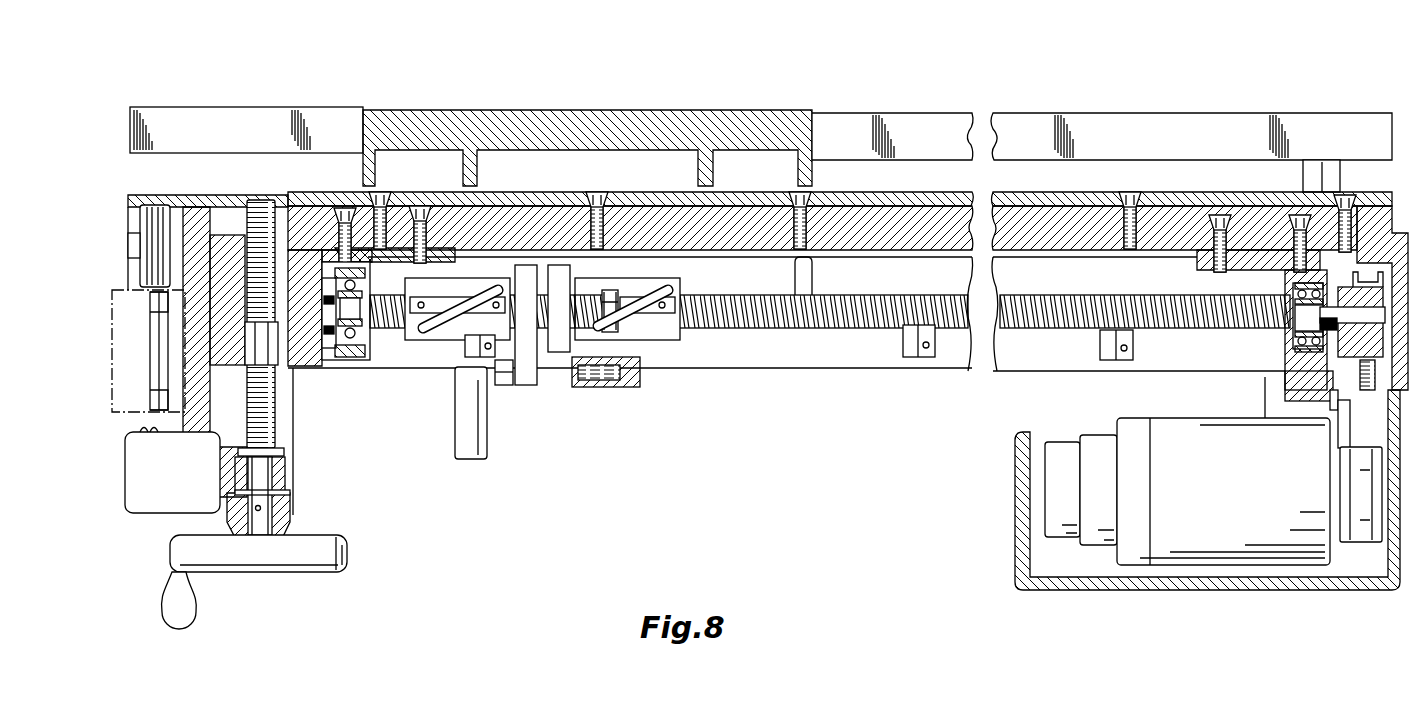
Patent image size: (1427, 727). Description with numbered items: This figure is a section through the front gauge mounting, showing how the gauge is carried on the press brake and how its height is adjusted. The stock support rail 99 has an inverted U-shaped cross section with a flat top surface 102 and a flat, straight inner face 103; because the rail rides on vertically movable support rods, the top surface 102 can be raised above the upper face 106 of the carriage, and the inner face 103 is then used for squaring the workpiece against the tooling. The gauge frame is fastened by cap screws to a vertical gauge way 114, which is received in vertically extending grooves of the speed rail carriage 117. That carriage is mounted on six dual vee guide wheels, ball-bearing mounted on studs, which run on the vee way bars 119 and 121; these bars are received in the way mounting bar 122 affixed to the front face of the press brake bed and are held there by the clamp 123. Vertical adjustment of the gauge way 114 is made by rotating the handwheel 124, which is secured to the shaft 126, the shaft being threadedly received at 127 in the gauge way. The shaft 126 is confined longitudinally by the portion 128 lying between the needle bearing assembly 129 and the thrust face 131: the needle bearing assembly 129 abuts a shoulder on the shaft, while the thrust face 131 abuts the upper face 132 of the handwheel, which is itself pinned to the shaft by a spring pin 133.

The stock support rail 99 is at (905, 95).
The flat top surface 102 is at (1130, 112).
The inner face 103 is at (1225, 130).
The upper face of the carriage 106 is at (576, 110).
The vertical gauge way 114 is at (233, 235).
The speed rail carriage 117 is at (150, 195).
The vee way bar 119 is at (150, 295).
The vee way bar 121 is at (150, 405).
The way mounting bar 122 is at (128, 348).
The clamp 123 is at (175, 362).
The handwheel 124 is at (178, 555).
The shaft 126 is at (280, 424).
The threaded engagement 127 is at (280, 366).
The portion of the shaft 128 is at (288, 476).
The needle bearing assembly 129 is at (283, 453).
The thrust face 131 is at (275, 500).
The upper face of the handwheel 132 is at (288, 490).
The spring pin 133 is at (255, 535).